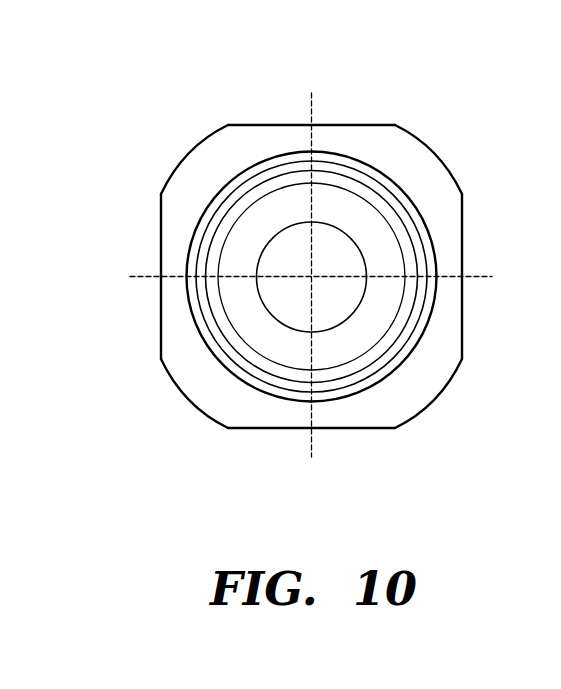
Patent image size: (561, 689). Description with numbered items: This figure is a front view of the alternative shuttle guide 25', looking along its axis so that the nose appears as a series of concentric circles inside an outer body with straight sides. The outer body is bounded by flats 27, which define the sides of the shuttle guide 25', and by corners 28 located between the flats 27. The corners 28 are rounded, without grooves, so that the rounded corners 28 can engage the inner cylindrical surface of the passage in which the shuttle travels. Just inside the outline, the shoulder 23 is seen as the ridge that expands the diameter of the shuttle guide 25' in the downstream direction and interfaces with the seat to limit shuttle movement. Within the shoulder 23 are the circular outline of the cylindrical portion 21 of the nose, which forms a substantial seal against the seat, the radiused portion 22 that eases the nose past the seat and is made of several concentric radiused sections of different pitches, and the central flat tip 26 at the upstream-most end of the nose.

The alternative shuttle guide 25' is at (296, 278).
The corners 28 is at (189, 153).
The flats 27 is at (350, 125).
The shoulder 23 is at (271, 137).
The cylindrical portion 21 is at (414, 202).
The radiused portion 22 is at (413, 320).
The flat tip 26 is at (304, 268).